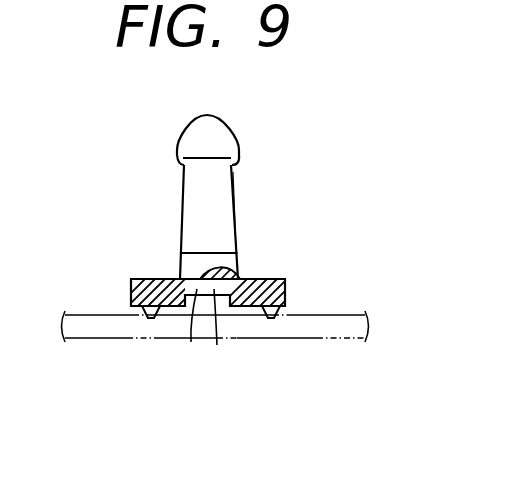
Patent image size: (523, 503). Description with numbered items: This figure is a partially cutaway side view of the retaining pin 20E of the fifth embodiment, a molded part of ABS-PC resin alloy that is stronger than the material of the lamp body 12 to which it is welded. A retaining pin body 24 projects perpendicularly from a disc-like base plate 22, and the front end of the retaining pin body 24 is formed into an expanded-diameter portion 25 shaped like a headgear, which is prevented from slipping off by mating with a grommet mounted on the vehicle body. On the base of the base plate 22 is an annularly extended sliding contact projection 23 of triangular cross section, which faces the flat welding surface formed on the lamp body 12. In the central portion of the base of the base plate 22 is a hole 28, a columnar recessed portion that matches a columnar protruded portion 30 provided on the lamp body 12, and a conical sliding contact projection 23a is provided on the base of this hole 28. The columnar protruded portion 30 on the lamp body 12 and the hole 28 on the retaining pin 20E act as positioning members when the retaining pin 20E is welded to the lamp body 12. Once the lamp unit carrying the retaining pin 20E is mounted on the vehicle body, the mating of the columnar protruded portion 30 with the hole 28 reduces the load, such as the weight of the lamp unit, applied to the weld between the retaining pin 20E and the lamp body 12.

The lamp body 12 is at (307, 338).
The retaining pin 20E is at (174, 198).
The base plate 22 is at (286, 290).
The sliding contact projection 23 is at (149, 314).
The conical sliding contact projection 23a is at (217, 345).
The retaining pin body 24 is at (244, 191).
The expanded-diameter portion 25 is at (240, 143).
The hole 28 is at (193, 335).
The columnar protruded portion 30 is at (240, 273).